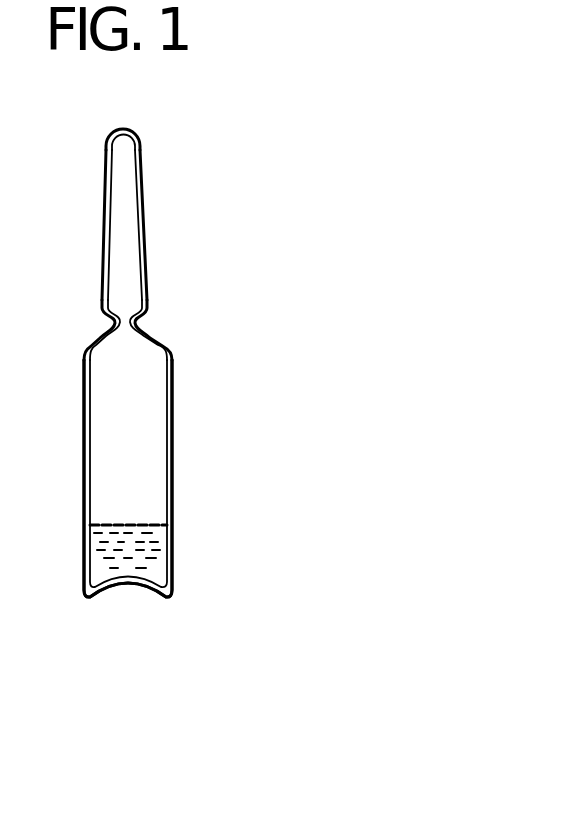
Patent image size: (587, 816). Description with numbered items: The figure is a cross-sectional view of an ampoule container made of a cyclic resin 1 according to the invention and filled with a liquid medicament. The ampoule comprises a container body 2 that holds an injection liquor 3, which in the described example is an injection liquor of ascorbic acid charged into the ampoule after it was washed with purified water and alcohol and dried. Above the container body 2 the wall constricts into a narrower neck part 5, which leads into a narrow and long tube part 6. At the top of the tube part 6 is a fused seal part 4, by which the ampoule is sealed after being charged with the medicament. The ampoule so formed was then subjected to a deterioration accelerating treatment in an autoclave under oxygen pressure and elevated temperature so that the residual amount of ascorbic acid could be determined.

The cyclic resin 1 is at (172, 381).
The container body 2 is at (177, 475).
The injection liquor 3 is at (137, 553).
The fused seal part 4 is at (139, 134).
The narrower neck part 5 is at (147, 317).
The narrow and long tube part 6 is at (147, 214).